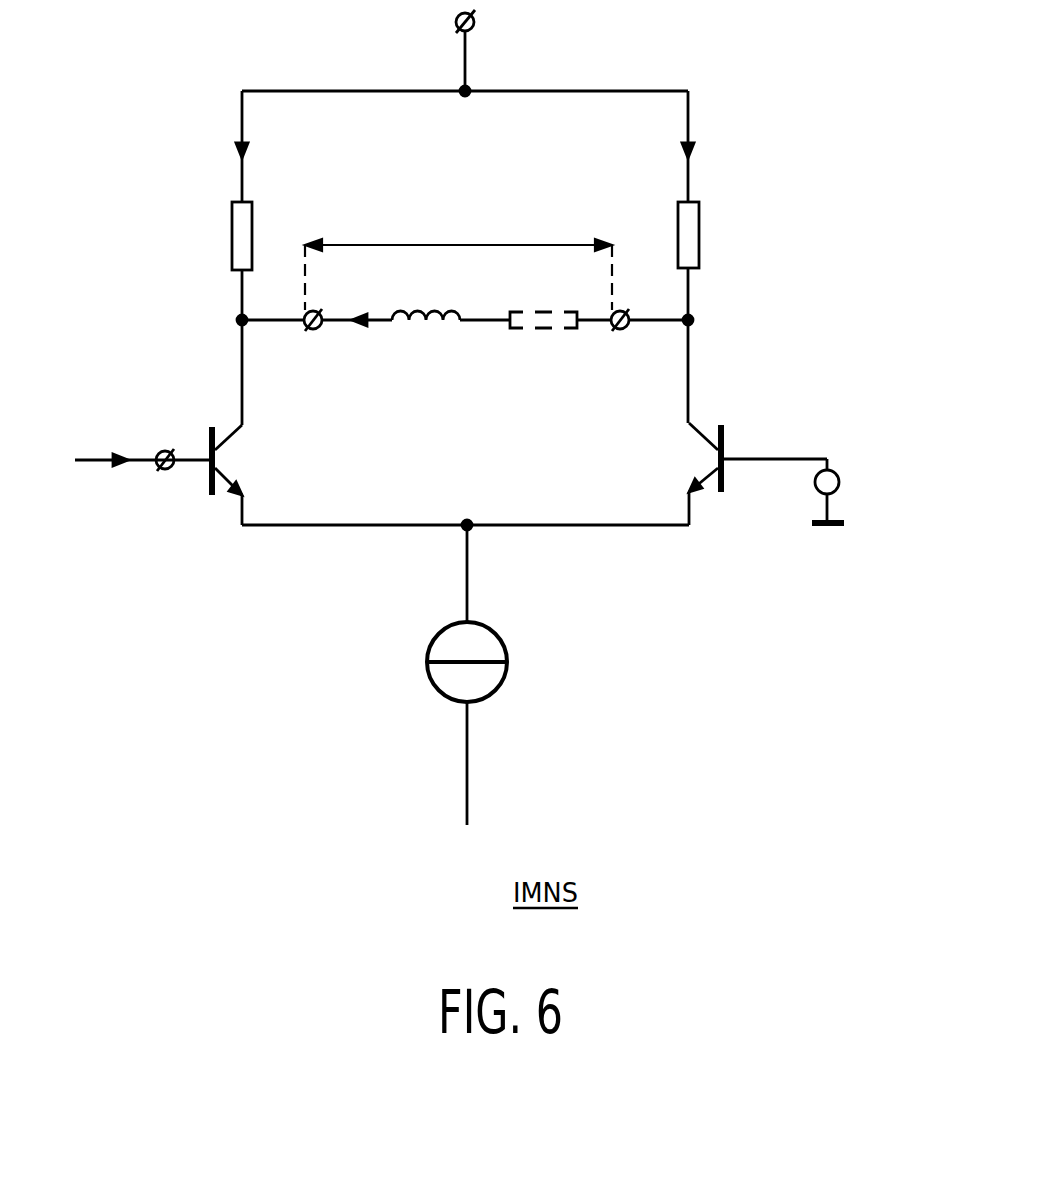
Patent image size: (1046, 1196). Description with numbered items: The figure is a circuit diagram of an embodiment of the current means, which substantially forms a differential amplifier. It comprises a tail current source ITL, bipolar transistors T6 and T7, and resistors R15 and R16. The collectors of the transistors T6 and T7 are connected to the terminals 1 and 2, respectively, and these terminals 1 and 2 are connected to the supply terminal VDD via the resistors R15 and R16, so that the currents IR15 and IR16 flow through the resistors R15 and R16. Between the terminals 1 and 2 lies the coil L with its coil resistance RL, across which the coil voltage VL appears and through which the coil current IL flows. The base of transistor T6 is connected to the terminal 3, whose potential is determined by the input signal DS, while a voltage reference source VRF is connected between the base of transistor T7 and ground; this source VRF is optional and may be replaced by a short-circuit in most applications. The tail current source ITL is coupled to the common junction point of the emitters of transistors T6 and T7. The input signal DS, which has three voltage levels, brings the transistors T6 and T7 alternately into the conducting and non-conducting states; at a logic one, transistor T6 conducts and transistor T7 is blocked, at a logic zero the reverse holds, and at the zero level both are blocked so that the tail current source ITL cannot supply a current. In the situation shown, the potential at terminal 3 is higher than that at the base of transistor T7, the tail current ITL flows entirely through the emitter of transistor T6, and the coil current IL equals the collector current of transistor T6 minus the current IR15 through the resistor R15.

The terminal 1 is at (315, 330).
The terminal 2 is at (622, 330).
The terminal 3 is at (161, 449).
The supply terminal VDD is at (475, 21).
The current through resistor R15 IR15 is at (252, 152).
The current through resistor R16 IR16 is at (700, 152).
The resistor R15 is at (232, 237).
The resistor R16 is at (699, 235).
The coil current IL is at (355, 307).
The coil L is at (433, 323).
The coil resistance RL is at (543, 322).
The coil voltage VL is at (445, 244).
The bipolar transistor T6 is at (220, 459).
The bipolar transistor T7 is at (712, 459).
The input signal DS is at (92, 468).
The voltage reference source VRF is at (840, 481).
The tail current source ITL is at (507, 642).